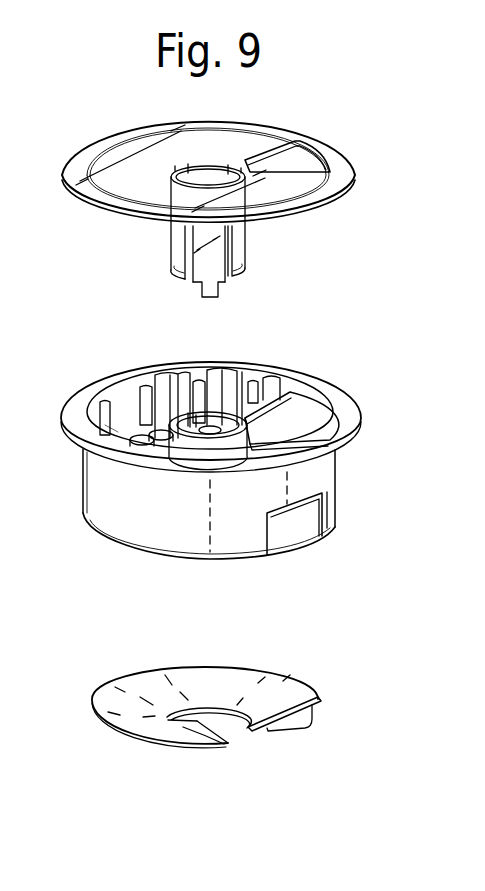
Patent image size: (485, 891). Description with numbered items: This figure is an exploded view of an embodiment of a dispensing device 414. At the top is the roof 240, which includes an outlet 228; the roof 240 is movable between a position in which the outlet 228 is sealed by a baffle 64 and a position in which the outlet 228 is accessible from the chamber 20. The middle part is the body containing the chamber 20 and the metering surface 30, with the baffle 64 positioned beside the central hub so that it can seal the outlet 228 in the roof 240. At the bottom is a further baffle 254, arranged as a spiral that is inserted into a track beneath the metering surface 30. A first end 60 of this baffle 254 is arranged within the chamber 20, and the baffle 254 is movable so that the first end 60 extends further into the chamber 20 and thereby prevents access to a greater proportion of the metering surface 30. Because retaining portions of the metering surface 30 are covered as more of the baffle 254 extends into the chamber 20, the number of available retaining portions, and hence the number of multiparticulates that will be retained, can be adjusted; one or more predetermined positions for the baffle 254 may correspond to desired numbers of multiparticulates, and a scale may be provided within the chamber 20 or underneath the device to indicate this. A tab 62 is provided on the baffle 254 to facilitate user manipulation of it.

The roof 240 is at (93, 148).
The outlet 228 is at (303, 160).
The dispensing device 414 is at (388, 287).
The chamber 20 is at (227, 392).
The metering surface 30 is at (127, 436).
The baffle 64 is at (290, 418).
The baffle 254 is at (190, 682).
The first end 60 is at (185, 727).
The tab 62 is at (292, 718).